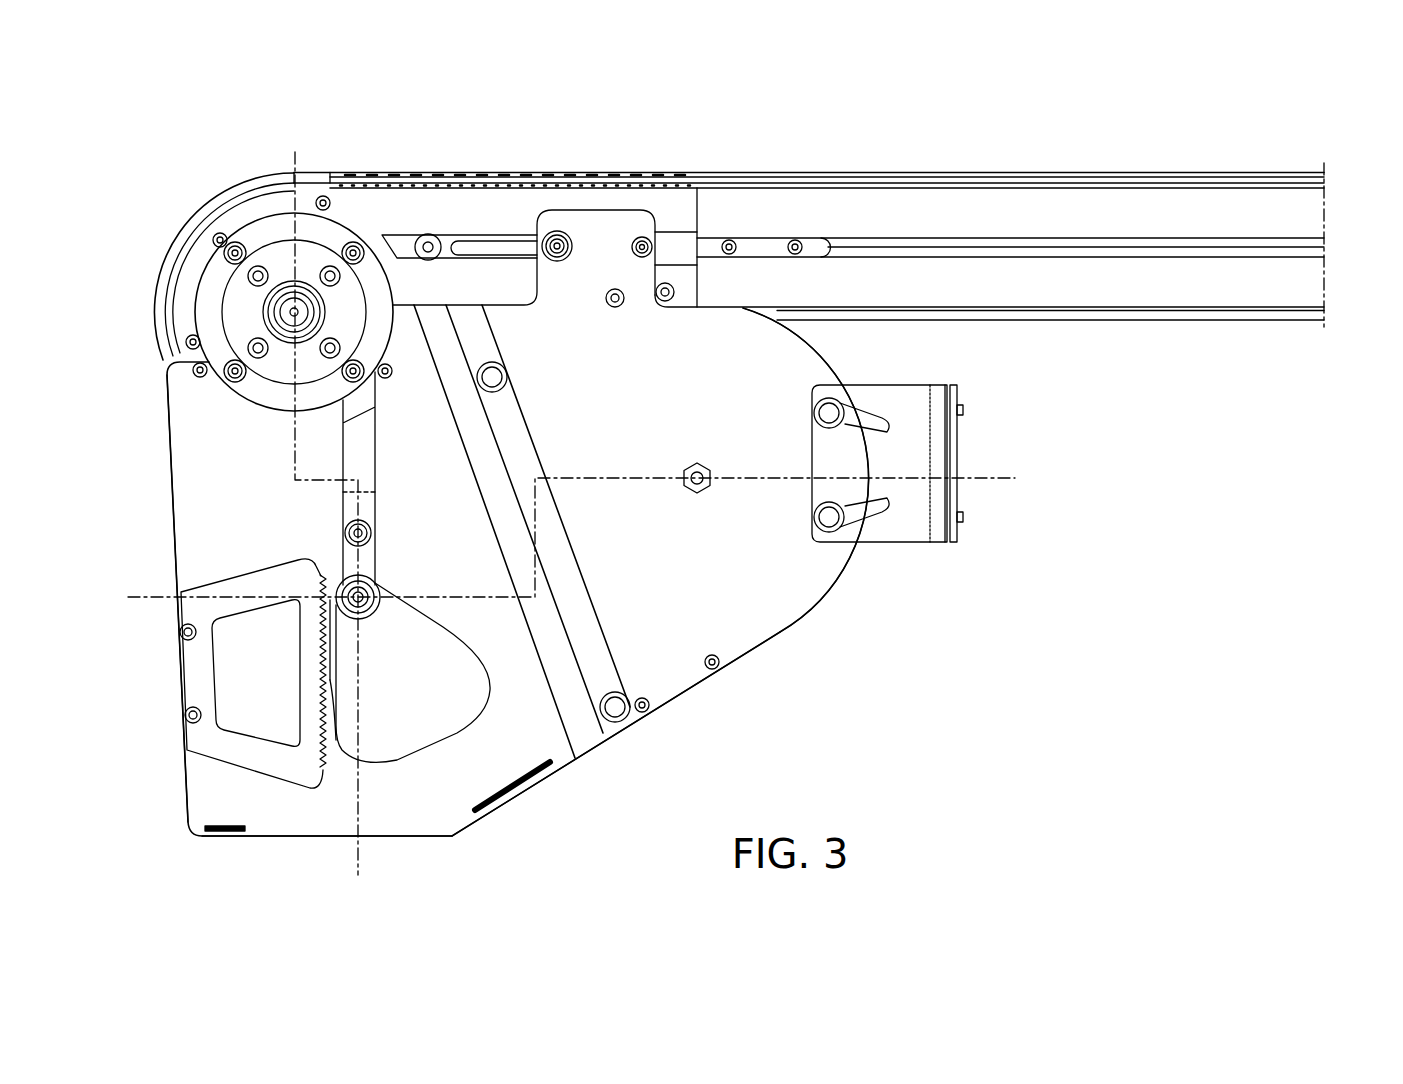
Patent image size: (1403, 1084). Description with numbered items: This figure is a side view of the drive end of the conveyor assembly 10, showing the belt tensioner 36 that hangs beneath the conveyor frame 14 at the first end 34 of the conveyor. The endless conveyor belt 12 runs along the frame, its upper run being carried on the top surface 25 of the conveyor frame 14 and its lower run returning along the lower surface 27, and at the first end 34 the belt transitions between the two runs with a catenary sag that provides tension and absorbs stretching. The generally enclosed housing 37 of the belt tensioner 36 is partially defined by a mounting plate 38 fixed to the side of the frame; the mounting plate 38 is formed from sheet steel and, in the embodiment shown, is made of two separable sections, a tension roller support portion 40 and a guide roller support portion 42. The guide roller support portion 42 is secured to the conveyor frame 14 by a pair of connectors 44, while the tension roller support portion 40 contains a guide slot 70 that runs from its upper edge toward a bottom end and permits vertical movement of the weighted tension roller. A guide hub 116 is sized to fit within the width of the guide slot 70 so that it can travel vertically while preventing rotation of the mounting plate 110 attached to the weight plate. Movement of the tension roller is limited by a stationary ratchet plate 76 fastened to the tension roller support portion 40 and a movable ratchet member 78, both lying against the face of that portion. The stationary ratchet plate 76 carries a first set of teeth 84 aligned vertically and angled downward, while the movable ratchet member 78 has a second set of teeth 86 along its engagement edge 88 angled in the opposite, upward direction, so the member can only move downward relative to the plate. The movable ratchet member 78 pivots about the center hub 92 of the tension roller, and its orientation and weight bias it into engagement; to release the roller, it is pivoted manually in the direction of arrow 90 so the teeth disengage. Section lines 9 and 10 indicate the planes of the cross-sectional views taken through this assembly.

The section line 9- 9 is at (312, 875).
The conveyor assembly 10 is at (1015, 523).
The conveyor belt 12 is at (618, 176).
The conveyor frame 14 is at (1326, 212).
The top surface 25 is at (1190, 183).
The lower surface 27 is at (1188, 313).
The first end 34 is at (242, 218).
The conveyor belt tensioner 36 is at (536, 808).
The housing 37 is at (172, 462).
The mounting plate 38 is at (766, 643).
The tension roller support portion 40 is at (413, 800).
The guide roller support portion 42 is at (800, 576).
The connectors 44 is at (643, 237).
The guide slot 70 is at (378, 462).
The stationary ratchet plate 76 is at (262, 580).
The movable ratchet member 78 is at (445, 712).
The first set of teeth 84 is at (322, 772).
The second set of teeth 86 is at (333, 668).
The engagement edge 88 is at (338, 716).
The arrow 90 is at (498, 612).
The center hub 92 is at (377, 586).
The mounting plate 110 is at (350, 507).
The guide hub 116 is at (370, 522).